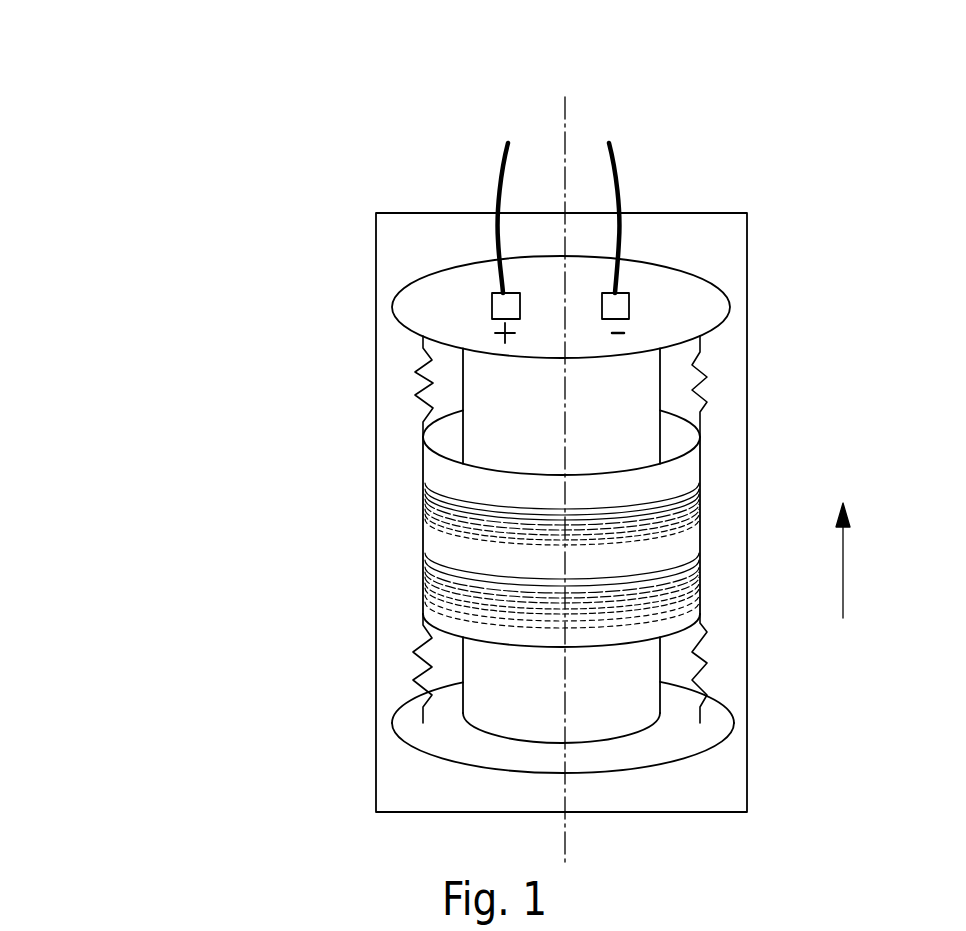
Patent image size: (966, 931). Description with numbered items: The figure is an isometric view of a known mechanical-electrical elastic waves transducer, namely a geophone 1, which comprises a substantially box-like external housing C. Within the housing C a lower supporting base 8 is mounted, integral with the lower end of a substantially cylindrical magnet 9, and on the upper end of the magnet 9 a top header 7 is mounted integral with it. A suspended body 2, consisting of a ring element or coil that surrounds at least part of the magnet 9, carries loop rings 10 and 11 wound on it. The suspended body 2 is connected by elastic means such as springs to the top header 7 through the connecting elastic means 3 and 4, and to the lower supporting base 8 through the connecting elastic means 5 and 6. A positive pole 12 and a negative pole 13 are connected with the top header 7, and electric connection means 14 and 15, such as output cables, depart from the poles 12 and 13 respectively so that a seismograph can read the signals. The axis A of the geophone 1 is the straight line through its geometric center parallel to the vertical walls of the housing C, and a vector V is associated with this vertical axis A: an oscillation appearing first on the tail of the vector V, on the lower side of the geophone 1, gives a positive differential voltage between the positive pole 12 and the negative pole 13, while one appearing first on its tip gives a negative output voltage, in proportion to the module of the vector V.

The geophone 1 is at (227, 832).
The suspended body 2 is at (668, 470).
The connecting elastic means 3 is at (416, 372).
The connecting elastic means 4 is at (712, 352).
The connecting elastic means 5 is at (420, 695).
The connecting elastic means 6 is at (699, 680).
The top header 7 is at (703, 305).
The lower supporting base 8 is at (688, 732).
The magnet 9 is at (625, 697).
The loop ring 10 is at (437, 505).
The loop ring 11 is at (440, 582).
The positive pole 12 is at (493, 305).
The negative pole 13 is at (622, 302).
The electric connection means 14 is at (498, 190).
The electric connection means 15 is at (622, 190).
The axis A is at (565, 132).
The vector V is at (863, 560).
The external housing C is at (622, 813).